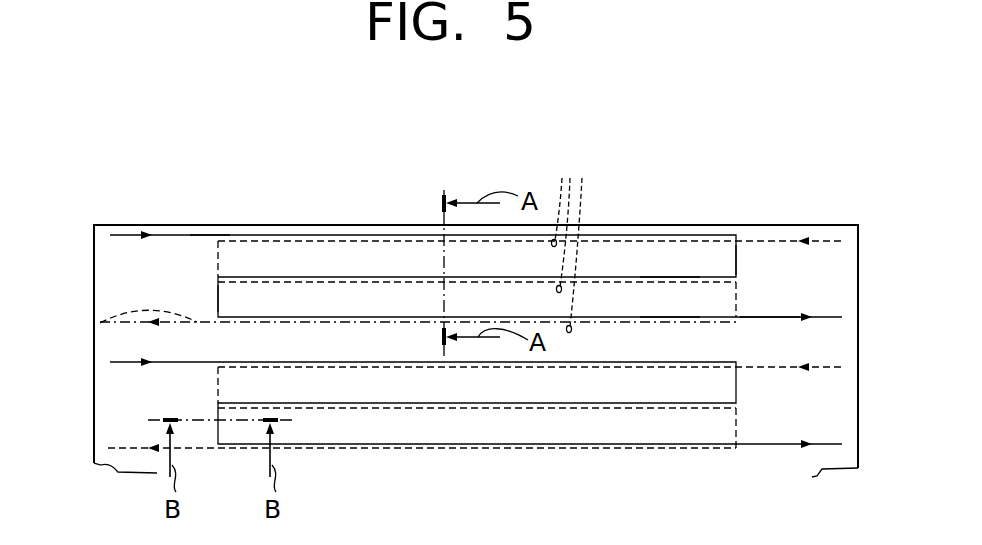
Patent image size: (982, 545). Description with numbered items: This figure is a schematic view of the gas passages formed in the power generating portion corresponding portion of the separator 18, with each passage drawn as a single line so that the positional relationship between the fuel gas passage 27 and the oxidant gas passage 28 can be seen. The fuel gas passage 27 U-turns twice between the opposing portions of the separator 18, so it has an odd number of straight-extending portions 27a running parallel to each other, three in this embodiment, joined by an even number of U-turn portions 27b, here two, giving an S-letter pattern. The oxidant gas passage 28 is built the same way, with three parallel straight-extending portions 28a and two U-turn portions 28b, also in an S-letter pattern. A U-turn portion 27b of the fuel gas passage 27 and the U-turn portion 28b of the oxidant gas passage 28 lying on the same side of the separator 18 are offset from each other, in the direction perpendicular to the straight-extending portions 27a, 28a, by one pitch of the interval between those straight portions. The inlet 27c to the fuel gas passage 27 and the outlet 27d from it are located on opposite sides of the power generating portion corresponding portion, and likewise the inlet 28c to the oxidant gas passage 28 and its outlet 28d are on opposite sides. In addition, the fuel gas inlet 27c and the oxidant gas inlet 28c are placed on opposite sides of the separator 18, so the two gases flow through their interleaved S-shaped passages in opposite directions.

The separator 18 is at (613, 226).
The fuel gas passage 27 is at (837, 242).
The straight-extending portions 27a is at (577, 242).
The U-turn portions 27b is at (218, 253).
The inlet 27c is at (755, 240).
The outlet 27d is at (96, 321).
The oxidant gas passage 28 is at (820, 317).
The straight-extending portions 28a is at (653, 317).
The U-turn portions 28b is at (217, 298).
The inlet 28c is at (205, 235).
The outlet 28d is at (767, 320).